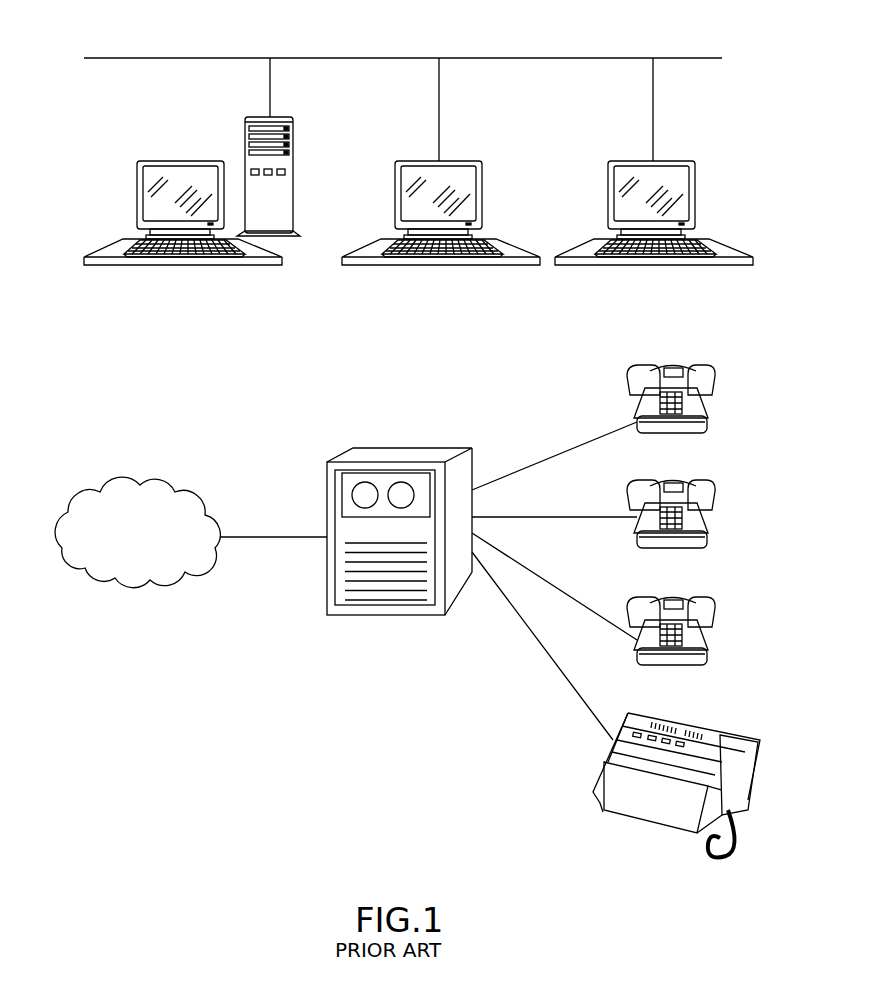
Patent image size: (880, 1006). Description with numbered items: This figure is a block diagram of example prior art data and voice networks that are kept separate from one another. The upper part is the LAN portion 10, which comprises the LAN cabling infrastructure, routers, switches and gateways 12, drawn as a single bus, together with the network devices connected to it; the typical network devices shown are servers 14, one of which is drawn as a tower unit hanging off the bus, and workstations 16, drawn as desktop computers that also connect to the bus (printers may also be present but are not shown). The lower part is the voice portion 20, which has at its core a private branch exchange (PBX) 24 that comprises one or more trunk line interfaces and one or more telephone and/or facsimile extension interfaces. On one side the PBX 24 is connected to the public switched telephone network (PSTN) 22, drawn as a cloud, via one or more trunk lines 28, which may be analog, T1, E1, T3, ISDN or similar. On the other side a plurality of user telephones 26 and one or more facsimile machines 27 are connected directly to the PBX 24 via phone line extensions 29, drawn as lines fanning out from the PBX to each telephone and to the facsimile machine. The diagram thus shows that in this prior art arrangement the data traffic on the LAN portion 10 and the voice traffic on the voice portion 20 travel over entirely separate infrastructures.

The LAN portion 10 is at (106, 319).
The LAN cabling infrastructure, routers, switches and gateways 12 is at (703, 58).
The servers 14 is at (293, 148).
The workstations 16 is at (621, 160).
The voice portion 20 is at (106, 641).
The public switched telephone network (PSTN) 22 is at (128, 480).
The private branch exchange (PBX) 24 is at (395, 452).
The user telephones 26 is at (705, 517).
The facsimile machines 27 is at (720, 732).
The trunk lines 28 is at (272, 537).
The phone line extensions 29 is at (545, 458).